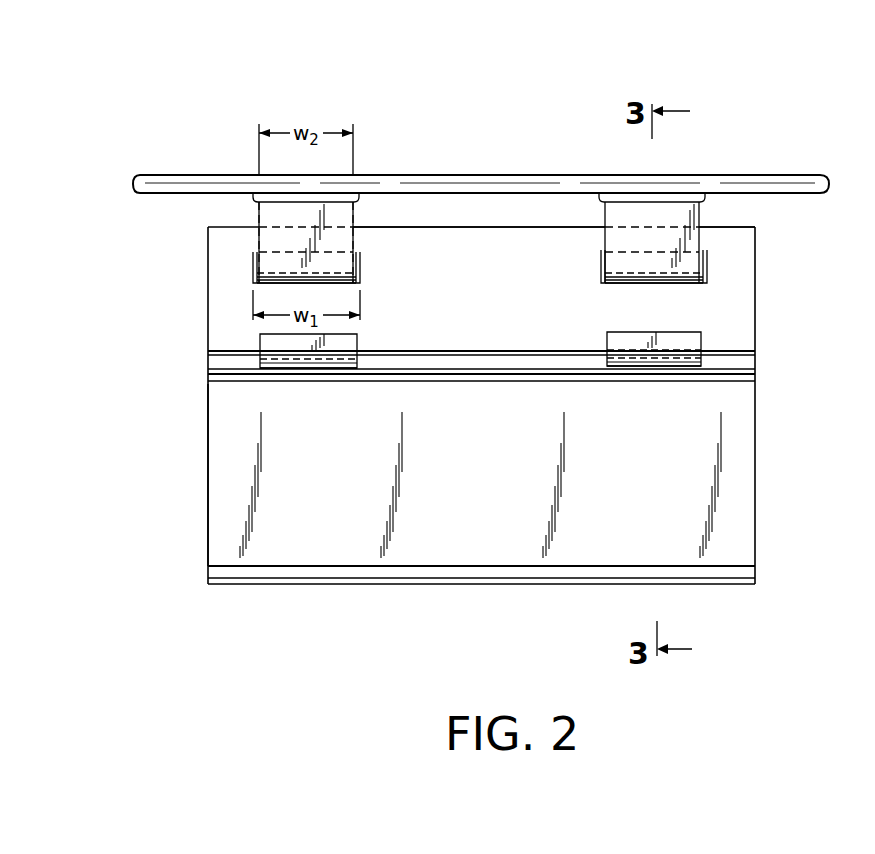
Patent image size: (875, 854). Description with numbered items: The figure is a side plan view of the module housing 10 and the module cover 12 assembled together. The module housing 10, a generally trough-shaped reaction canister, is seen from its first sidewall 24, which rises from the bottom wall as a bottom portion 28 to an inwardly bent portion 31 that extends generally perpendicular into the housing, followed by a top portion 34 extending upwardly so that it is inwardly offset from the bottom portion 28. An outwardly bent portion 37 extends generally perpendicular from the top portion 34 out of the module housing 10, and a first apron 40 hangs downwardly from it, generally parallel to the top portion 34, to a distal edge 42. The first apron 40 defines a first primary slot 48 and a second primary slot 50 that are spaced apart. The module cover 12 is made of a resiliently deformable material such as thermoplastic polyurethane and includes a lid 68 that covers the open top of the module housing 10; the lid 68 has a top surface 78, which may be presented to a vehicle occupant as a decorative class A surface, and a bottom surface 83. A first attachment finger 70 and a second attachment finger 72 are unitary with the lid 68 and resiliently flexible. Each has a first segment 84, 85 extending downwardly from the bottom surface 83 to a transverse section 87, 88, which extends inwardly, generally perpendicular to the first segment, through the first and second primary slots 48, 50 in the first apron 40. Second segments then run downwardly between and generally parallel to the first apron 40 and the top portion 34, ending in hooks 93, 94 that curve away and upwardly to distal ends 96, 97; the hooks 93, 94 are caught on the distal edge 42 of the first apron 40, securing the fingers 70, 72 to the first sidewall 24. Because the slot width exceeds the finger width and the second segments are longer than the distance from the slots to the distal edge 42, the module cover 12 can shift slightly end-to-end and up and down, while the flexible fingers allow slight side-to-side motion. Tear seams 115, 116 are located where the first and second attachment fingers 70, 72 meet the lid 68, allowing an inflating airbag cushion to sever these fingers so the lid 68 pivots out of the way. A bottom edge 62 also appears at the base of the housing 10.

The module housing 10 is at (340, 593).
The module cover 12 is at (179, 152).
The first sidewall 24 is at (499, 484).
The bottom portion 28 is at (757, 458).
The inwardly bent portion 31 is at (744, 374).
The top portion 34 is at (756, 360).
The outwardly bent portion 37 is at (745, 226).
The first apron 40 is at (501, 307).
The distal edge 42 is at (498, 356).
The first primary slot 48 is at (254, 275).
The second primary slot 50 is at (600, 272).
The bottom rail 62 is at (255, 575).
The lid 68 is at (481, 198).
The first attachment finger 70 is at (293, 256).
The second attachment finger 72 is at (672, 254).
The top surface 78 is at (386, 175).
The bottom surface 83 is at (453, 195).
The first segment 84 is at (355, 236).
The first segment 85 is at (606, 232).
The transverse section 87 is at (362, 263).
The transverse section 88 is at (675, 280).
The hook 93 is at (335, 369).
The hook 94 is at (655, 367).
The distal end 96 is at (357, 336).
The distal end 97 is at (677, 332).
The tear seam 115 is at (344, 202).
The tear seam 116 is at (622, 201).